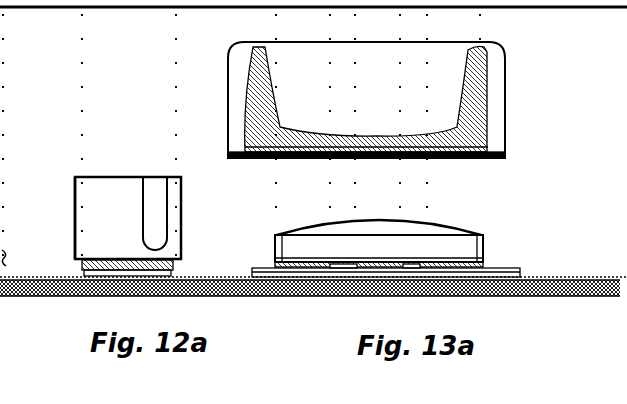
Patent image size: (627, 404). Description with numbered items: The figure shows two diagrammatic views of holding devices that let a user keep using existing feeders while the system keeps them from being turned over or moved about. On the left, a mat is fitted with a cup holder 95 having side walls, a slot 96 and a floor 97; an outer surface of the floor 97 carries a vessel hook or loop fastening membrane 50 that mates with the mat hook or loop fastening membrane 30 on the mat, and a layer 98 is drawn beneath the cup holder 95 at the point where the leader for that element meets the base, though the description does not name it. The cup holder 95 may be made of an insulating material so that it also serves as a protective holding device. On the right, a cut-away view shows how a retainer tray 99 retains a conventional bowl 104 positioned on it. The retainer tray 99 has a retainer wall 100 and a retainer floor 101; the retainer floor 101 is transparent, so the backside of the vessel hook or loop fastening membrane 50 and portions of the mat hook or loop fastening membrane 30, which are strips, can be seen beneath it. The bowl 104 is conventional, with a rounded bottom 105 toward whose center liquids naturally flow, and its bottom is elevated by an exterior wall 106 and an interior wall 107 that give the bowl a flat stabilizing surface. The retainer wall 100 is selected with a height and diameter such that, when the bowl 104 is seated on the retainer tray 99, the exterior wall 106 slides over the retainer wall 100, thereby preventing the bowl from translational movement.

In FIG. 12A, the mat hook or loop fastening membrane 30 is at (177, 268).
In FIG. 13A, the mat hook or loop fastening membrane 30 is at (420, 268).
In FIG. 12A, the vessel hook or loop fastening membrane 50 is at (175, 273).
In FIG. 13A, the vessel hook or loop fastening membrane 50 is at (495, 268).
In FIG. 12A, the cup holder 95 is at (128, 237).
In FIG. 12A, the slot 96 is at (152, 207).
In FIG. 12A, the floor 97 is at (84, 200).
In FIG. 12A, the base layer 98 is at (82, 267).
In FIG. 13A, the retainer tray 99 is at (387, 254).
In FIG. 13A, the retainer wall 100 is at (298, 230).
In FIG. 13A, the retainer floor 101 is at (420, 257).
In FIG. 13A, the bowl 104 is at (330, 87).
In FIG. 13A, the rounded bottom 105 is at (377, 133).
In FIG. 13A, the exterior wall 106 is at (497, 118).
In FIG. 13A, the interior wall 107 is at (480, 95).